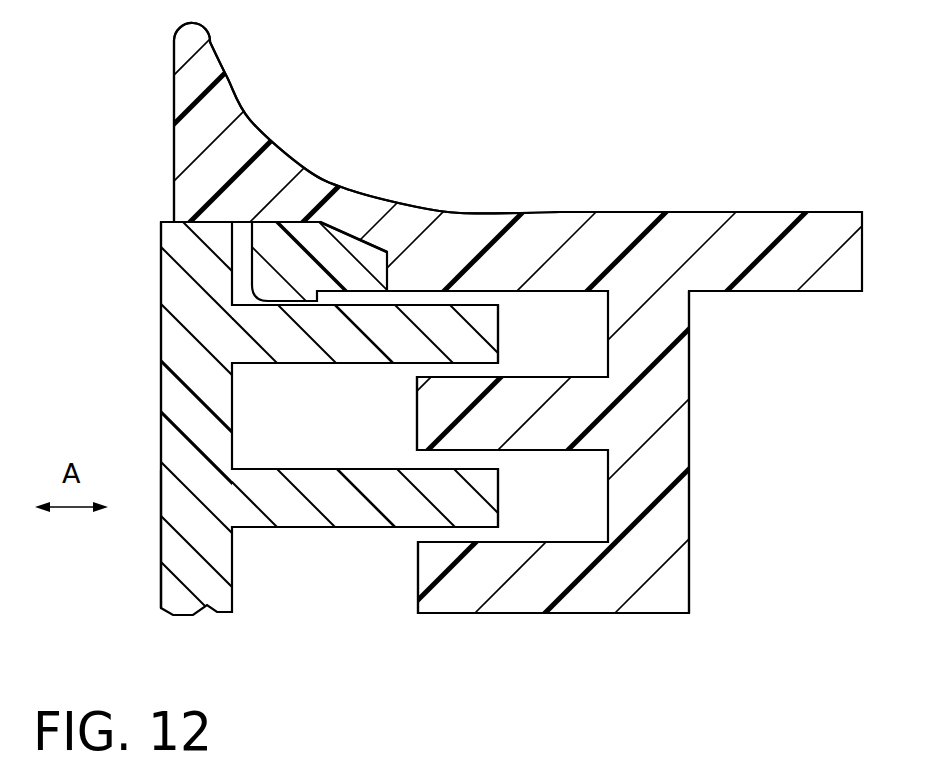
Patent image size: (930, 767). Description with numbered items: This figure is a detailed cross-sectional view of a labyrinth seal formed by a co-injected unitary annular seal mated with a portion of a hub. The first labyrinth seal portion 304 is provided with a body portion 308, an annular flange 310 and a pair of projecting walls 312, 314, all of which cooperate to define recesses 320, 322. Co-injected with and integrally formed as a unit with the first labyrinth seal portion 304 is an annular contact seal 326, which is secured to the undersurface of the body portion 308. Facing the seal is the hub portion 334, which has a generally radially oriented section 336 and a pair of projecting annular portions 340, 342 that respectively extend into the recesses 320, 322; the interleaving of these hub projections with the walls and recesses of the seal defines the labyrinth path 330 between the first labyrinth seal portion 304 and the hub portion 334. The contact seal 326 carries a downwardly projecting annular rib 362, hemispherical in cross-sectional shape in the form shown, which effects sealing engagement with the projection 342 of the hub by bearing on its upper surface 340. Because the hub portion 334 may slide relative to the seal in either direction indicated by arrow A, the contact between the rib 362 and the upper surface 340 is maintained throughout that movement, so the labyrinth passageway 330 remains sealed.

The first labyrinth seal portion 304 is at (681, 209).
The body portion 308 is at (264, 128).
The annular flange 310 is at (689, 507).
The projecting wall 312 is at (553, 383).
The projecting wall 314 is at (517, 613).
The recess 320 is at (573, 508).
The recess 322 is at (578, 337).
The annular contact seal 326 is at (342, 224).
The labyrinth path 330 is at (363, 573).
The hub portion 334 is at (151, 559).
The generally radially oriented section 336 is at (163, 415).
The projecting annular portion (upper surface) 340 is at (433, 303).
The projecting annular portion 342 is at (297, 367).
The downwardly projecting annular rib 362 is at (268, 291).